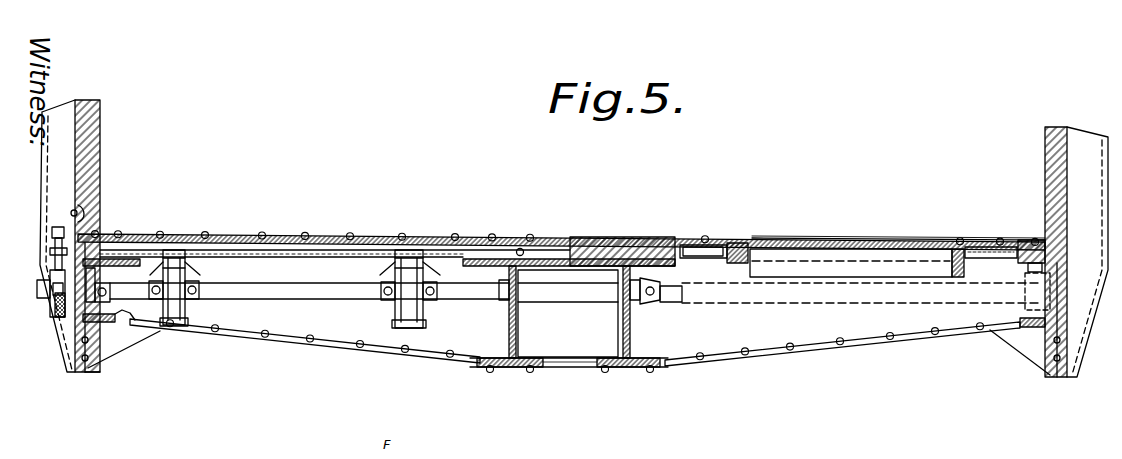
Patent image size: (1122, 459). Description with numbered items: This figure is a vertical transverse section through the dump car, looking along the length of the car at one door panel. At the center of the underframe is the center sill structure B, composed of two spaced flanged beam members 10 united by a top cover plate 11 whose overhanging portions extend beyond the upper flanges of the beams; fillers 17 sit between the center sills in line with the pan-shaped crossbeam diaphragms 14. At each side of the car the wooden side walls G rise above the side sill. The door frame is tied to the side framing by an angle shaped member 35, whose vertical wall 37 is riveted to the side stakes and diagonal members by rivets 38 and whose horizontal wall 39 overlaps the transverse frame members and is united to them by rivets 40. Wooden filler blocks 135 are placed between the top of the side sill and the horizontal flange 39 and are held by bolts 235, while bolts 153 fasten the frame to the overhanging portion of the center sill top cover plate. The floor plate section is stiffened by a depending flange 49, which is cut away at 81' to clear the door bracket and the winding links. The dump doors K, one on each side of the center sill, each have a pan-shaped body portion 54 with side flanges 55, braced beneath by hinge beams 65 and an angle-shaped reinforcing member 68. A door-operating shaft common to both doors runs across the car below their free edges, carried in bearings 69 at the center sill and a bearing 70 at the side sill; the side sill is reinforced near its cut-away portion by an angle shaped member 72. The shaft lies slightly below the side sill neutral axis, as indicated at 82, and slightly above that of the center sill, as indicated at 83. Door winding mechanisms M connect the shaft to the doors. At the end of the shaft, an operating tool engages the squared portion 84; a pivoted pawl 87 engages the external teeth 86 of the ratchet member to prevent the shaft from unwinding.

The wooden side walls G is at (100, 165).
The angle shaped member 35 is at (97, 236).
The rivets 40 is at (113, 238).
The horizontal wall 39 is at (168, 242).
The vertical wall 37 is at (90, 214).
The rivets 38 is at (73, 212).
The cut-away portion 81' is at (295, 268).
The door winding mechanism M is at (190, 306).
The depending flange 49 is at (333, 252).
The top cover plate 11 is at (97, 282).
The angle shaped member 72 is at (74, 345).
The diaphragm 14 is at (245, 328).
The flanged beam member 10 is at (487, 368).
The center sill structure B is at (569, 330).
The filler 17 is at (580, 352).
The shaft position above center sill neutral axis 83 is at (606, 296).
The bearing 69 is at (503, 312).
The shaft position below side sill neutral axis 82 is at (676, 303).
The bolts 153 is at (658, 240).
The side flange 55 is at (688, 254).
The hinge beam 65 is at (745, 270).
The reinforcing member 68 is at (855, 267).
The body portion 54 is at (804, 244).
The dump door K is at (847, 228).
The wooden filler block 135 is at (1038, 238).
The bolts 235 is at (1030, 268).
The bearing 70 is at (1043, 296).
The pivoted pawl 87 is at (56, 284).
The squared portion 84 is at (37, 291).
The external teeth 86 is at (54, 306).